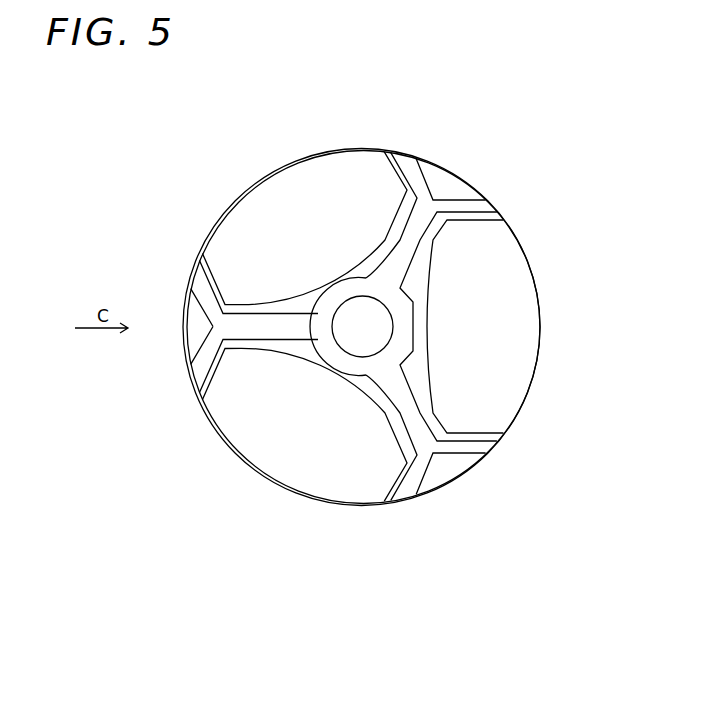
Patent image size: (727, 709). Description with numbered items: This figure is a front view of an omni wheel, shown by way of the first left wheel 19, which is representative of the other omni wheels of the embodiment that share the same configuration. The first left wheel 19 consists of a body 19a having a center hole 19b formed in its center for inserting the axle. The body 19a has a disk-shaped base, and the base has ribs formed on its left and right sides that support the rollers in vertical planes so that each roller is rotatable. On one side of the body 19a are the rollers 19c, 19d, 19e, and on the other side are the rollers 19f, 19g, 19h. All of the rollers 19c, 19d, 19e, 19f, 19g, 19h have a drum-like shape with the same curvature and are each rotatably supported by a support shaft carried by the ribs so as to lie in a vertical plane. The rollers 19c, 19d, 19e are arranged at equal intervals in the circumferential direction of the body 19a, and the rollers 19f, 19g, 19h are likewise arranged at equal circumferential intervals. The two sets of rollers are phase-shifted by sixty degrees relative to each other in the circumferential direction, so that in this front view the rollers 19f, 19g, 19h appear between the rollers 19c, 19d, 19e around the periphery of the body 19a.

The first left wheel 19 is at (585, 179).
The body 19a is at (452, 470).
The center hole 19b is at (358, 342).
The roller 19c is at (527, 317).
The roller 19d is at (250, 195).
The roller 19e is at (250, 460).
The roller 19f is at (188, 365).
The roller 19g is at (452, 172).
The roller 19h is at (487, 453).